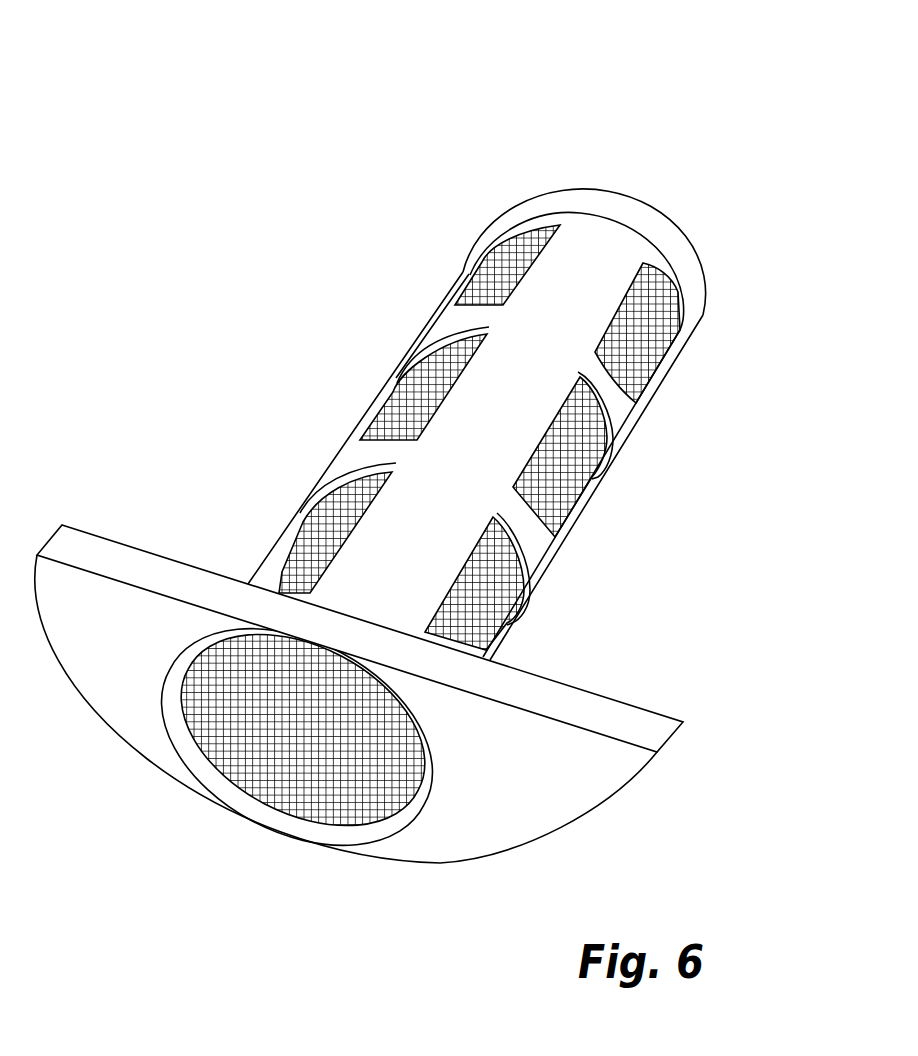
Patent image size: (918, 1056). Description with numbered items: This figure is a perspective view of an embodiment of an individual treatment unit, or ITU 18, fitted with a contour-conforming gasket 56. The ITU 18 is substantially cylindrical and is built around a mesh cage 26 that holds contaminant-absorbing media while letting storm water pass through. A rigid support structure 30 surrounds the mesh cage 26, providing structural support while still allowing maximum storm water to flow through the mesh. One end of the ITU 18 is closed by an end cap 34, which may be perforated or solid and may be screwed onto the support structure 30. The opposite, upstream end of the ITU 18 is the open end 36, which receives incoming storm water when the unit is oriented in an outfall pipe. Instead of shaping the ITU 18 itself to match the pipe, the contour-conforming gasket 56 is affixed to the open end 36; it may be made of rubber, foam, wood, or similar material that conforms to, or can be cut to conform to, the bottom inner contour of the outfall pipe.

The individual treatment unit 18 is at (138, 92).
The mesh cage 26 is at (390, 405).
The rigid support structure 30 is at (430, 325).
The end cap 34 is at (515, 203).
The open end 36 is at (222, 843).
The contour-conforming gasket 56 is at (140, 547).